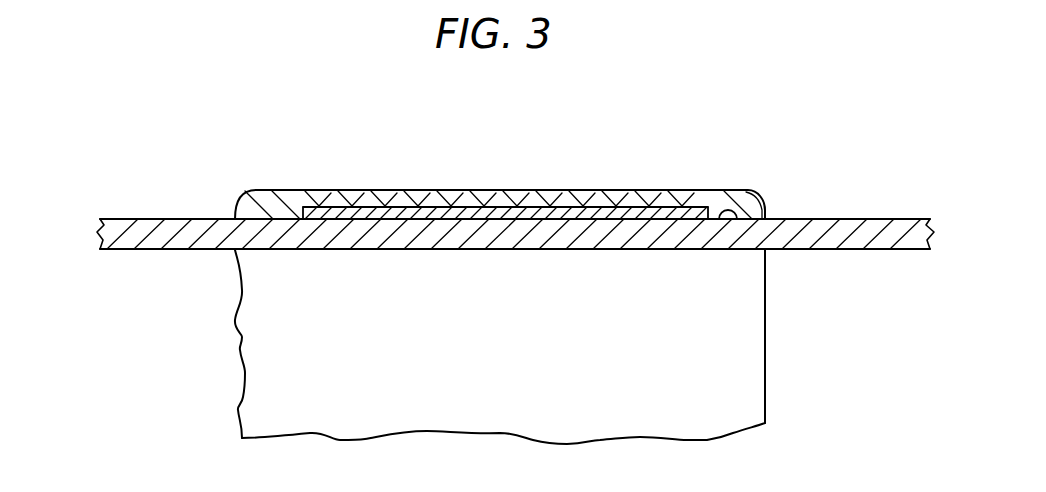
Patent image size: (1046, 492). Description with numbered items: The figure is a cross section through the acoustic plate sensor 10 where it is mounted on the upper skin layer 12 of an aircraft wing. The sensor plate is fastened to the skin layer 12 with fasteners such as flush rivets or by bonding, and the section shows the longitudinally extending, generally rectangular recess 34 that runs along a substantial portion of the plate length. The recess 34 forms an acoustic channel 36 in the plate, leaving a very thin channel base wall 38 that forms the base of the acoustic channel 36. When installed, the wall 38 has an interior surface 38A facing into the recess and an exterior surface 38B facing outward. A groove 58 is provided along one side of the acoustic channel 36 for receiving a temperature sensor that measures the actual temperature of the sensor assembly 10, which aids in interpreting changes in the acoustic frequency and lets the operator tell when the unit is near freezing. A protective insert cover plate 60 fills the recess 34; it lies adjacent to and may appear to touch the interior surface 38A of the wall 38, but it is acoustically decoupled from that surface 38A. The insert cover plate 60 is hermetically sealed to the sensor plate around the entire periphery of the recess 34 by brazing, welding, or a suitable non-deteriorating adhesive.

The acoustic plate sensor 10 is at (289, 182).
The upper skin layer 12 is at (845, 250).
The recess 34 is at (364, 212).
The acoustic channel 36 is at (676, 191).
The channel base wall 38 is at (499, 164).
The interior surface 38A is at (590, 227).
The exterior surface 38B is at (427, 195).
The groove 58 is at (728, 222).
The protective insert cover plate 60 is at (381, 207).